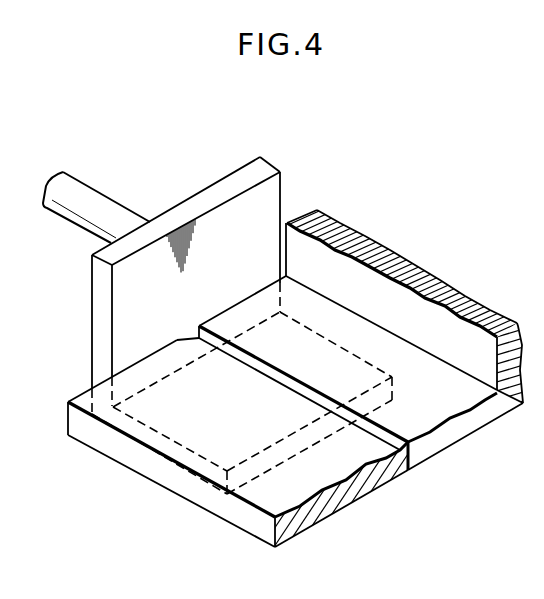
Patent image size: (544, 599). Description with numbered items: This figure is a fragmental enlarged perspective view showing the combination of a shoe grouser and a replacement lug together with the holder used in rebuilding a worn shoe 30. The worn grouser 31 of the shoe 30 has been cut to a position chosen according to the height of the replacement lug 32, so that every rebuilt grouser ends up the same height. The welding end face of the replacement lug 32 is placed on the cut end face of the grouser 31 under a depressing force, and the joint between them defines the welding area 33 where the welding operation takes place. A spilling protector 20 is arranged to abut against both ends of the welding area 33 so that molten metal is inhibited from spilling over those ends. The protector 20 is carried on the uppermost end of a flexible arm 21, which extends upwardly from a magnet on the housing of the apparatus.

The spilling protector 20 is at (102, 342).
The flexible arm 21 is at (85, 212).
The worn shoe 30 is at (442, 285).
The grouser 31 is at (352, 340).
The replacement lug 32 is at (252, 518).
The welding area 33 is at (365, 438).